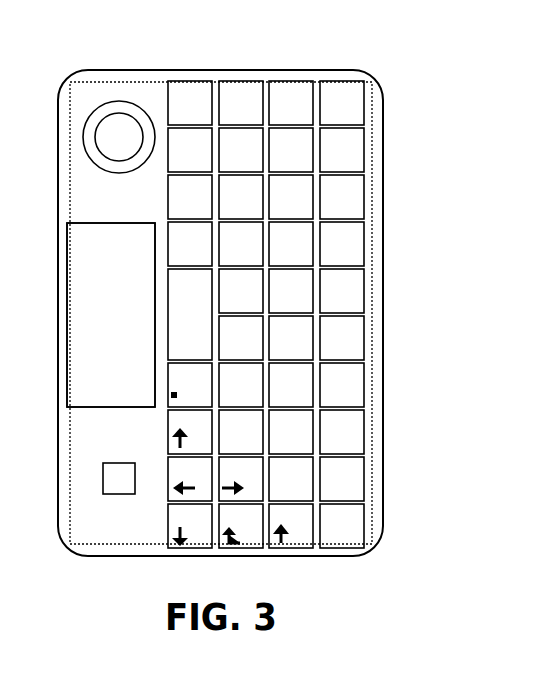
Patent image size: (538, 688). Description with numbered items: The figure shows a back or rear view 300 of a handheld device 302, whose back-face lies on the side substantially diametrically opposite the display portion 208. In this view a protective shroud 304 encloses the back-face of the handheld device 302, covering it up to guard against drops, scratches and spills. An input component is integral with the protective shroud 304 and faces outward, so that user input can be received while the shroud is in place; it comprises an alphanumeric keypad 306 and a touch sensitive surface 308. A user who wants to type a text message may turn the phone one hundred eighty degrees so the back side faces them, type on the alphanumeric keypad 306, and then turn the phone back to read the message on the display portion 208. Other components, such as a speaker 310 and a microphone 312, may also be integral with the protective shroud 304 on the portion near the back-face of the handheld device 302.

The back view 300 is at (317, 39).
The handheld device 302 is at (118, 82).
The protective shroud 304 is at (167, 69).
The alphanumeric keypad 306 is at (365, 157).
The touch sensitive surface 308 is at (110, 222).
The display portion 208 is at (80, 315).
The speaker 310 is at (93, 113).
The microphone 312 is at (107, 463).